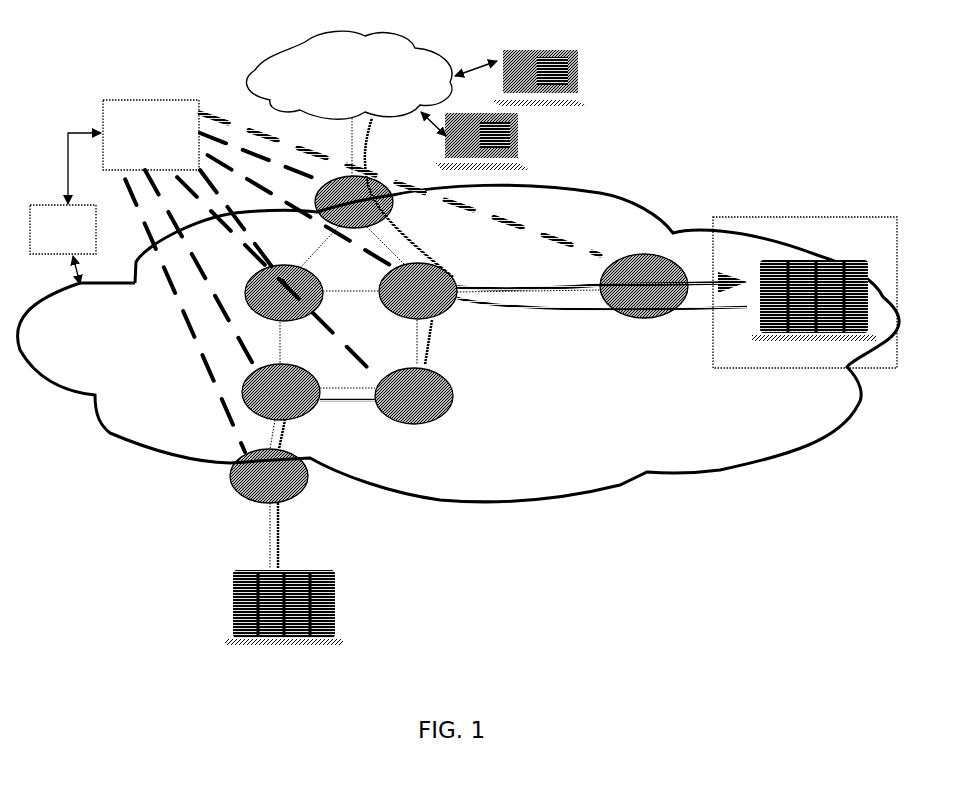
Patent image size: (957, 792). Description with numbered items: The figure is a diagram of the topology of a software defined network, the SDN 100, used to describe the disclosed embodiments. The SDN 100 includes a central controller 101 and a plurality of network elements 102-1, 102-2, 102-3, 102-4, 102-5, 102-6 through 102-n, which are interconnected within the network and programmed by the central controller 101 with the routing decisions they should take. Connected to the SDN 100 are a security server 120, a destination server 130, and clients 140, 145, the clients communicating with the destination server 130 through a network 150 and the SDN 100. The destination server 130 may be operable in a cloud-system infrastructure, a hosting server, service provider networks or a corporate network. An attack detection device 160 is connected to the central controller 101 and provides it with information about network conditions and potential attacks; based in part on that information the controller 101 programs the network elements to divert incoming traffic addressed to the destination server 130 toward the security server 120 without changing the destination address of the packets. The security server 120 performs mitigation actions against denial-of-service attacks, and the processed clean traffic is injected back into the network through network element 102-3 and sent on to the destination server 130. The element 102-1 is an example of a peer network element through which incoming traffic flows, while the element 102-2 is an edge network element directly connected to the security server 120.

The SDN-based network 100 is at (592, 185).
The central controller 101 is at (143, 99).
The network element 102-1 is at (315, 197).
The network element 102-2 is at (255, 293).
The network element 102-3 is at (667, 250).
The network element 102-4 is at (444, 298).
The network element 102-5 is at (247, 392).
The network element 102-6 is at (443, 396).
The network element 102-n is at (239, 476).
The security server 120 is at (755, 216).
The destination server 130 is at (335, 578).
The client 140 is at (541, 50).
The client 145 is at (518, 149).
The network 150 is at (364, 97).
The attack detection device 160 is at (78, 240).